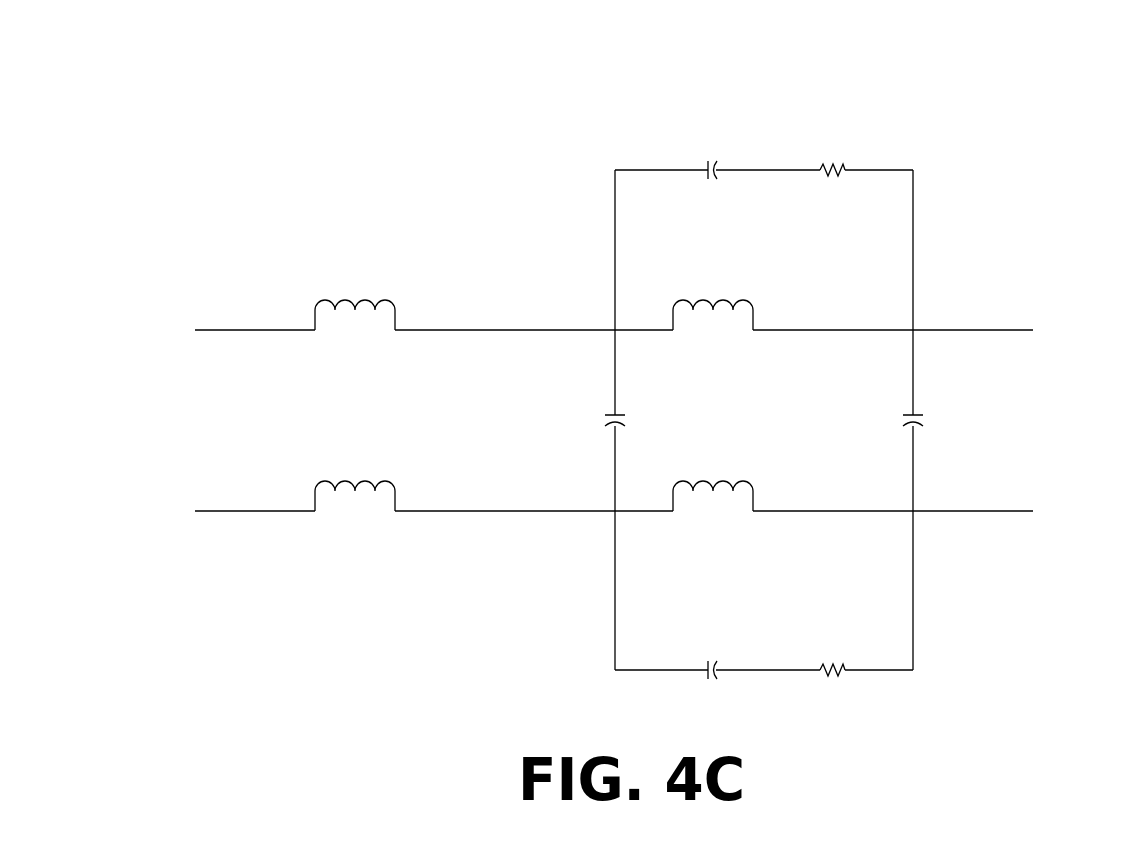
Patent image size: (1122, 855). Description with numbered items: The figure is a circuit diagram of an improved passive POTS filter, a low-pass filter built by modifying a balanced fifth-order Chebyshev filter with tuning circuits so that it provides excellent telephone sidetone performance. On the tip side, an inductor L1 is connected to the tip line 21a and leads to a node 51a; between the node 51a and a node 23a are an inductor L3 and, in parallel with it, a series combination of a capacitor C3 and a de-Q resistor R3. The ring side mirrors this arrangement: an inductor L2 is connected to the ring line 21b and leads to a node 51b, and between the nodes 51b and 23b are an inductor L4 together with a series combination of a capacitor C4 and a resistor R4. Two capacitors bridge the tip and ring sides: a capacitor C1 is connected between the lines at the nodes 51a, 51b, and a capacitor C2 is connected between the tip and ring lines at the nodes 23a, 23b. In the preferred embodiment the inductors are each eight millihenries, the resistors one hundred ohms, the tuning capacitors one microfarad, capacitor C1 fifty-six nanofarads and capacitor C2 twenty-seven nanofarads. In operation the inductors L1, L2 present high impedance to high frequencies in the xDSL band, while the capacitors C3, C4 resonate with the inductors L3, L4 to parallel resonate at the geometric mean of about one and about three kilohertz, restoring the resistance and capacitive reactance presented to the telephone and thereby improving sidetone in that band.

The tip line 21a is at (277, 330).
The ring line 21b is at (277, 511).
The node 23a is at (930, 332).
The node 23b is at (930, 513).
The node 51a is at (615, 333).
The node 51b is at (615, 514).
The inductor L1 is at (355, 300).
The inductor L2 is at (355, 482).
The inductor L3 is at (713, 300).
The inductor L4 is at (713, 482).
The capacitor C1 is at (640, 420).
The capacitor C2 is at (939, 420).
The capacitor C3 is at (713, 152).
The capacitor C4 is at (713, 656).
The resistor R3 is at (832, 158).
The resistor R4 is at (832, 656).